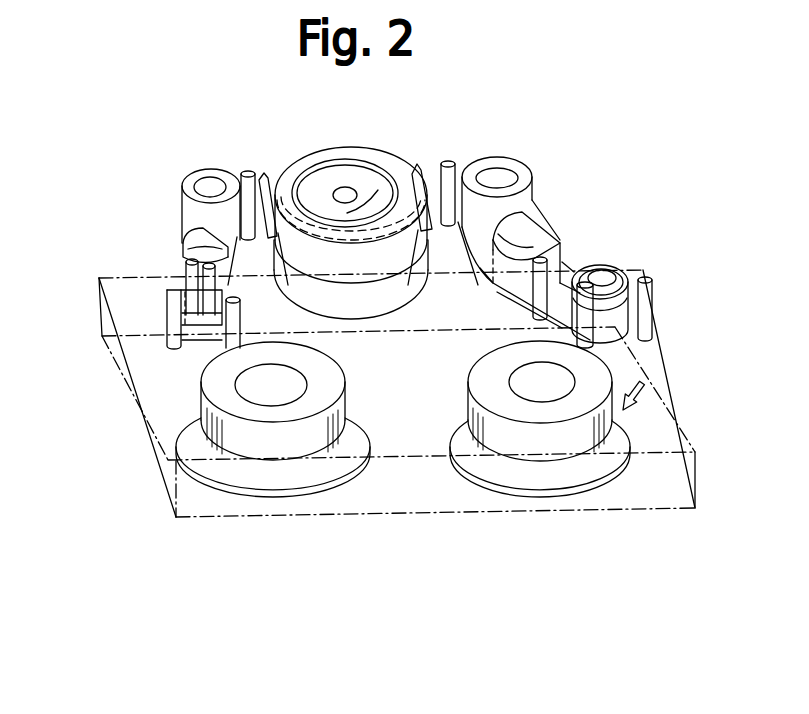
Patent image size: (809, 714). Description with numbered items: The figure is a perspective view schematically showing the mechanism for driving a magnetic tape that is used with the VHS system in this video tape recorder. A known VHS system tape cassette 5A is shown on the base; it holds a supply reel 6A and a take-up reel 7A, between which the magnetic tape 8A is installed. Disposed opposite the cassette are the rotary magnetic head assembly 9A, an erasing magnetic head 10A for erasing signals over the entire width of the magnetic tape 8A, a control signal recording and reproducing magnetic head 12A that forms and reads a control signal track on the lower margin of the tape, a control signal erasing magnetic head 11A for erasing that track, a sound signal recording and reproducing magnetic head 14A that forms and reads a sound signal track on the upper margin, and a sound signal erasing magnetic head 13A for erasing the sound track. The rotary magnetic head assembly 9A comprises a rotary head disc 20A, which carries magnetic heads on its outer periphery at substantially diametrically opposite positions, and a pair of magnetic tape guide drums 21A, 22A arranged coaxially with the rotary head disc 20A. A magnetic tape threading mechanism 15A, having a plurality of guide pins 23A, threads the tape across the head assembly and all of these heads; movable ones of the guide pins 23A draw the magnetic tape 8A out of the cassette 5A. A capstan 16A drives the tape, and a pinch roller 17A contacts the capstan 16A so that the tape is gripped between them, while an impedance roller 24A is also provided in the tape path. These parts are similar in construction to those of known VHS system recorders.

The VHS system tape cassette 5A is at (685, 433).
The supply reel 6A is at (290, 387).
The take-up reel 7A is at (530, 385).
The magnetic tape 8A is at (228, 343).
The rotary magnetic head assembly 9A is at (338, 216).
The erasing magnetic head 10A is at (206, 245).
The control signal erasing magnetic head 11A is at (497, 285).
The control signal recording and reproducing magnetic head 12A is at (513, 298).
The sound signal erasing magnetic head 13A is at (530, 216).
The sound signal recording and reproducing magnetic head 14A is at (543, 262).
The magnetic tape threading mechanism 15A is at (442, 281).
The capstan 16A is at (565, 262).
The pinch roller 17A is at (598, 261).
The rotary head disc 20A is at (374, 266).
The magnetic tape guide drum 21A is at (372, 158).
The magnetic tape guide drum 22A is at (314, 290).
The guide pins 23A is at (265, 174).
The impedance roller 24A is at (198, 176).